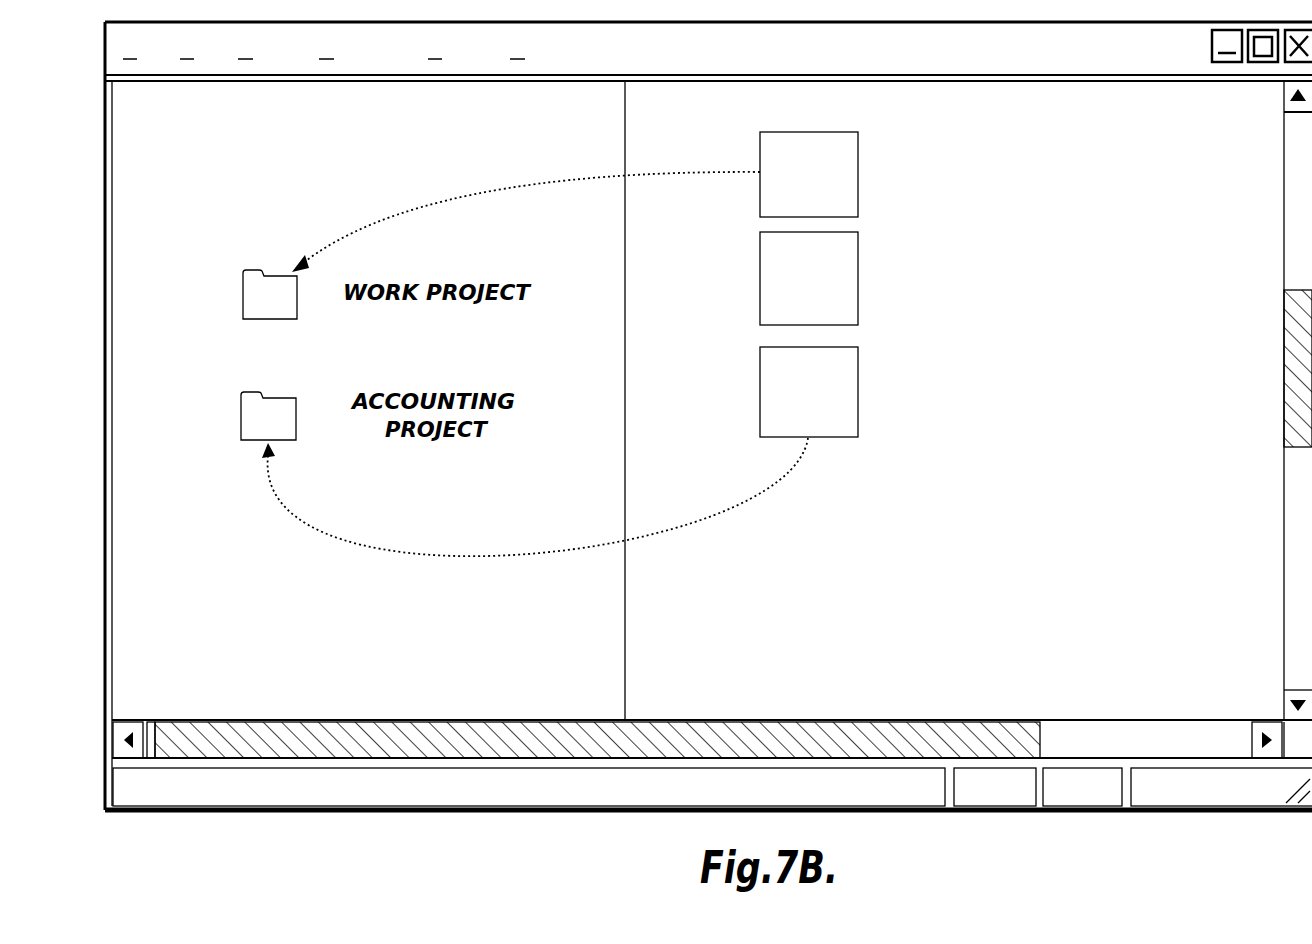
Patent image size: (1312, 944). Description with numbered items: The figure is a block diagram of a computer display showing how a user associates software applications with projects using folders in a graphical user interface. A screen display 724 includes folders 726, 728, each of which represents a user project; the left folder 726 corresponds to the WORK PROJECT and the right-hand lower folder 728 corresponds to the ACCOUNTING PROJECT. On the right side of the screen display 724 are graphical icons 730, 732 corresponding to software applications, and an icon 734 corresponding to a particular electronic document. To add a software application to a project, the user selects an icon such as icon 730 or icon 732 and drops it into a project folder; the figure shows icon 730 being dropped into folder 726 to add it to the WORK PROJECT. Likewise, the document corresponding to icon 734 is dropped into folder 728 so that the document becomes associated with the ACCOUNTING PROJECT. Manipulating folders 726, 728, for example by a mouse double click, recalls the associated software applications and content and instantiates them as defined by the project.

The screen display 724 is at (1253, 115).
The folder 726 is at (243, 292).
The folder 728 is at (241, 416).
The icon 730 is at (858, 176).
The icon 732 is at (858, 280).
The icon 734 is at (858, 394).